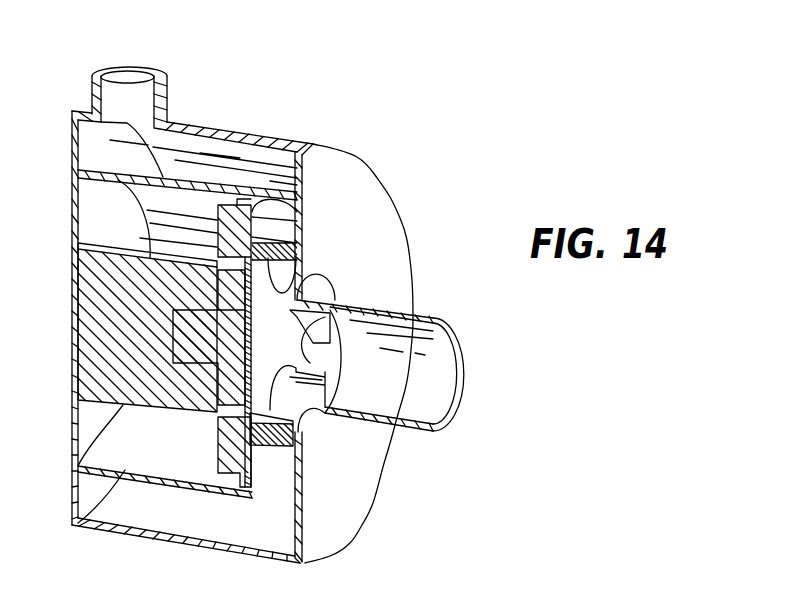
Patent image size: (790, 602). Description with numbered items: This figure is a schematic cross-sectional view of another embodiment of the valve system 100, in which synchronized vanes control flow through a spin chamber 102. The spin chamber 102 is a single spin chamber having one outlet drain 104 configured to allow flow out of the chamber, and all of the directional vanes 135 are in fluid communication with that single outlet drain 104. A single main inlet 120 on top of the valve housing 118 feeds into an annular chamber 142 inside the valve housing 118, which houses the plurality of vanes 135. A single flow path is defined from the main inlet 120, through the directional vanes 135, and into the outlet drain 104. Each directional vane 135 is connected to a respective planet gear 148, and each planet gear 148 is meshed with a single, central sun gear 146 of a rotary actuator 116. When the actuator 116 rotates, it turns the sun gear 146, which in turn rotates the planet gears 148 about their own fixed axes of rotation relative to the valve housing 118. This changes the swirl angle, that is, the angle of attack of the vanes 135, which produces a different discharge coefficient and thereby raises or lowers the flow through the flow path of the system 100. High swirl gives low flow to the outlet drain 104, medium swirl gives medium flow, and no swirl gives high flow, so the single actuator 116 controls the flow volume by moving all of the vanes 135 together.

The valve system 100 is at (362, 60).
The spin chamber 102 is at (263, 322).
The outlet drain 104 is at (432, 375).
The rotary actuator 116 is at (92, 342).
The valve housing 118 is at (221, 130).
The main inlet 120 is at (128, 45).
The directional vanes 135 is at (265, 266).
The annular chamber 142 is at (191, 507).
The sun gear 146 is at (128, 402).
The planet gear 148 is at (222, 208).